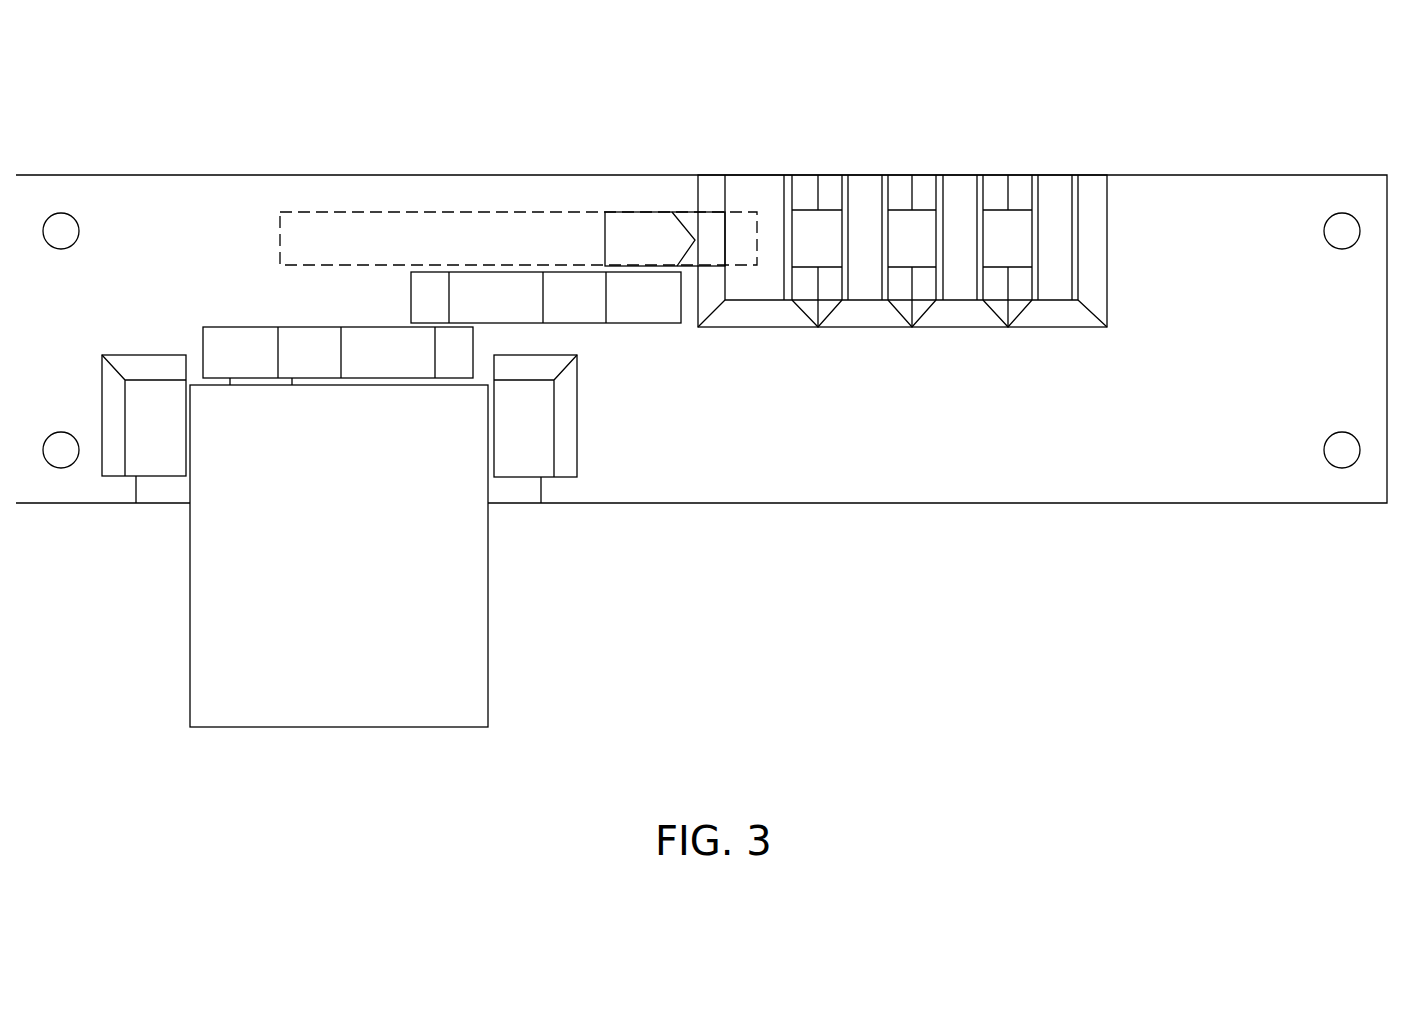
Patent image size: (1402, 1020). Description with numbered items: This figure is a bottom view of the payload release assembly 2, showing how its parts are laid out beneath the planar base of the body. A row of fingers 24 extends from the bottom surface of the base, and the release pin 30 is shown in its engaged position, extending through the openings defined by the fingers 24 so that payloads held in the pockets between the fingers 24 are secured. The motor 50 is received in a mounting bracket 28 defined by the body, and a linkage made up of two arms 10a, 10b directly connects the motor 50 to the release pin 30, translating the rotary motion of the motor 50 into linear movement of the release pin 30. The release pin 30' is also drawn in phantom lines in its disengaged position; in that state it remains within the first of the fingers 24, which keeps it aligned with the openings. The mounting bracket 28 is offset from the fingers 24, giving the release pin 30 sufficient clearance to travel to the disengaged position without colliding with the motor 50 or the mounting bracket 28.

The payload release assembly 2 is at (738, 104).
The arm 10a is at (231, 327).
The arm 10b is at (510, 290).
The release pin in disengaged position 30' is at (518, 184).
The release pin 30 is at (755, 181).
The fingers 24 is at (1054, 237).
The mounting bracket 28 is at (160, 433).
The motor 50 is at (402, 567).